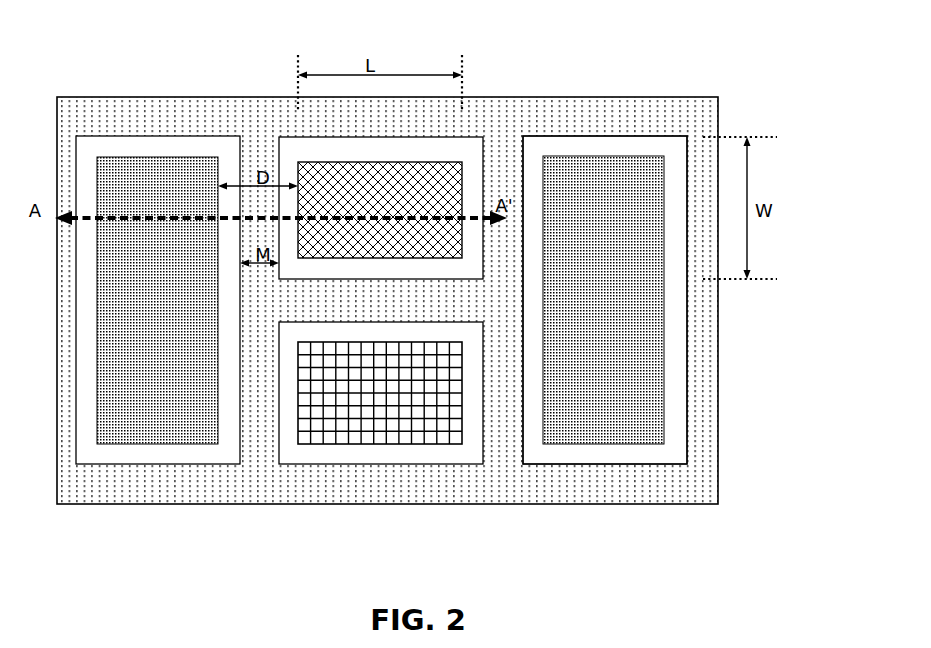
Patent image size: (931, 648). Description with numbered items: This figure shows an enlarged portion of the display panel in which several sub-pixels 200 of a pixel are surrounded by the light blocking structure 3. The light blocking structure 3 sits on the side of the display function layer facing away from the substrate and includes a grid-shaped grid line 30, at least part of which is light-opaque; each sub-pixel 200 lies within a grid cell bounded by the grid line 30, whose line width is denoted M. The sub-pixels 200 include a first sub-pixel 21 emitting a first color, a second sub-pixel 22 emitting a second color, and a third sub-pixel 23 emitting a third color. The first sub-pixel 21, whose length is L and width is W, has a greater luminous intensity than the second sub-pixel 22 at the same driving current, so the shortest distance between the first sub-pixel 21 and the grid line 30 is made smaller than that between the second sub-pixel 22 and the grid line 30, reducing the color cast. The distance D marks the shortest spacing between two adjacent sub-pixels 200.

The light blocking structure 3 is at (717, 119).
The grid line 30 is at (652, 120).
The first sub-pixel 21 is at (312, 168).
The second sub-pixel 22 is at (330, 407).
The third sub-pixel 23 is at (592, 167).
The sub-pixel 200 is at (605, 293).